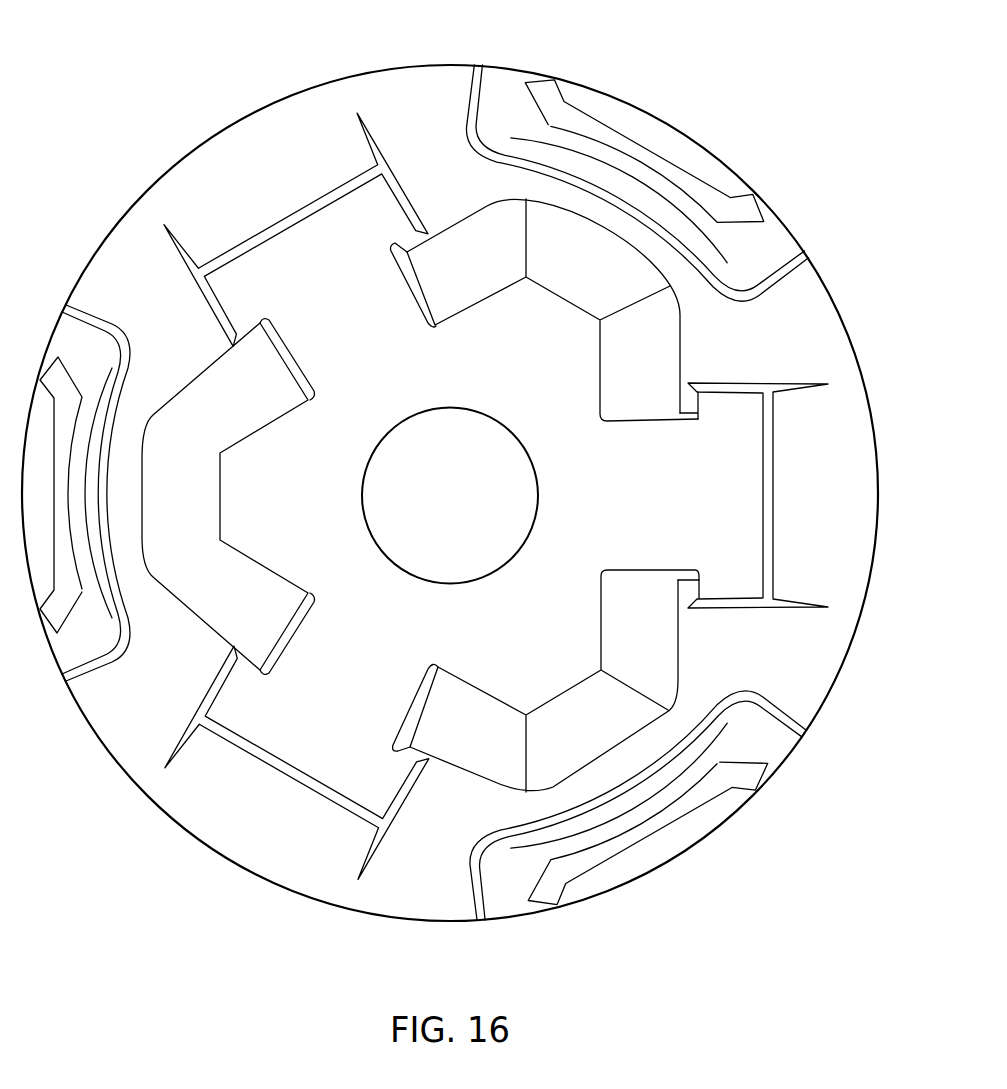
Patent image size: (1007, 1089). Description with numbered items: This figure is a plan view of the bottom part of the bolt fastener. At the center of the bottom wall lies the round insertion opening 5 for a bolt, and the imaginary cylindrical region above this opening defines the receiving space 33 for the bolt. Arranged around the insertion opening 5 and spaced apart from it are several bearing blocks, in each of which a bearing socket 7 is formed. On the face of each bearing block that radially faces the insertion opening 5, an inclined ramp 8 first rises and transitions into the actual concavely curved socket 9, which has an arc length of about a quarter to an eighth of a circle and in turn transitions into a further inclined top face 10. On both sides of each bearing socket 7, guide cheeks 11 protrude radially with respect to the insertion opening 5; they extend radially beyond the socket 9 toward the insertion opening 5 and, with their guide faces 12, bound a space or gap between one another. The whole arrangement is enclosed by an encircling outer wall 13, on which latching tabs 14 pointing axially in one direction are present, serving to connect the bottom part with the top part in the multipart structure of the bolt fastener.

The insertion opening 5 is at (534, 480).
The bearing socket 7 is at (343, 308).
The inclined ramp 8 is at (324, 272).
The socket 9 is at (336, 219).
The inclined top face 10 is at (297, 167).
The guide cheek 11 is at (442, 279).
The guide face 12 is at (417, 300).
The outer wall 13 is at (265, 107).
The latching tab 14 is at (622, 122).
The receiving space 33 is at (430, 509).